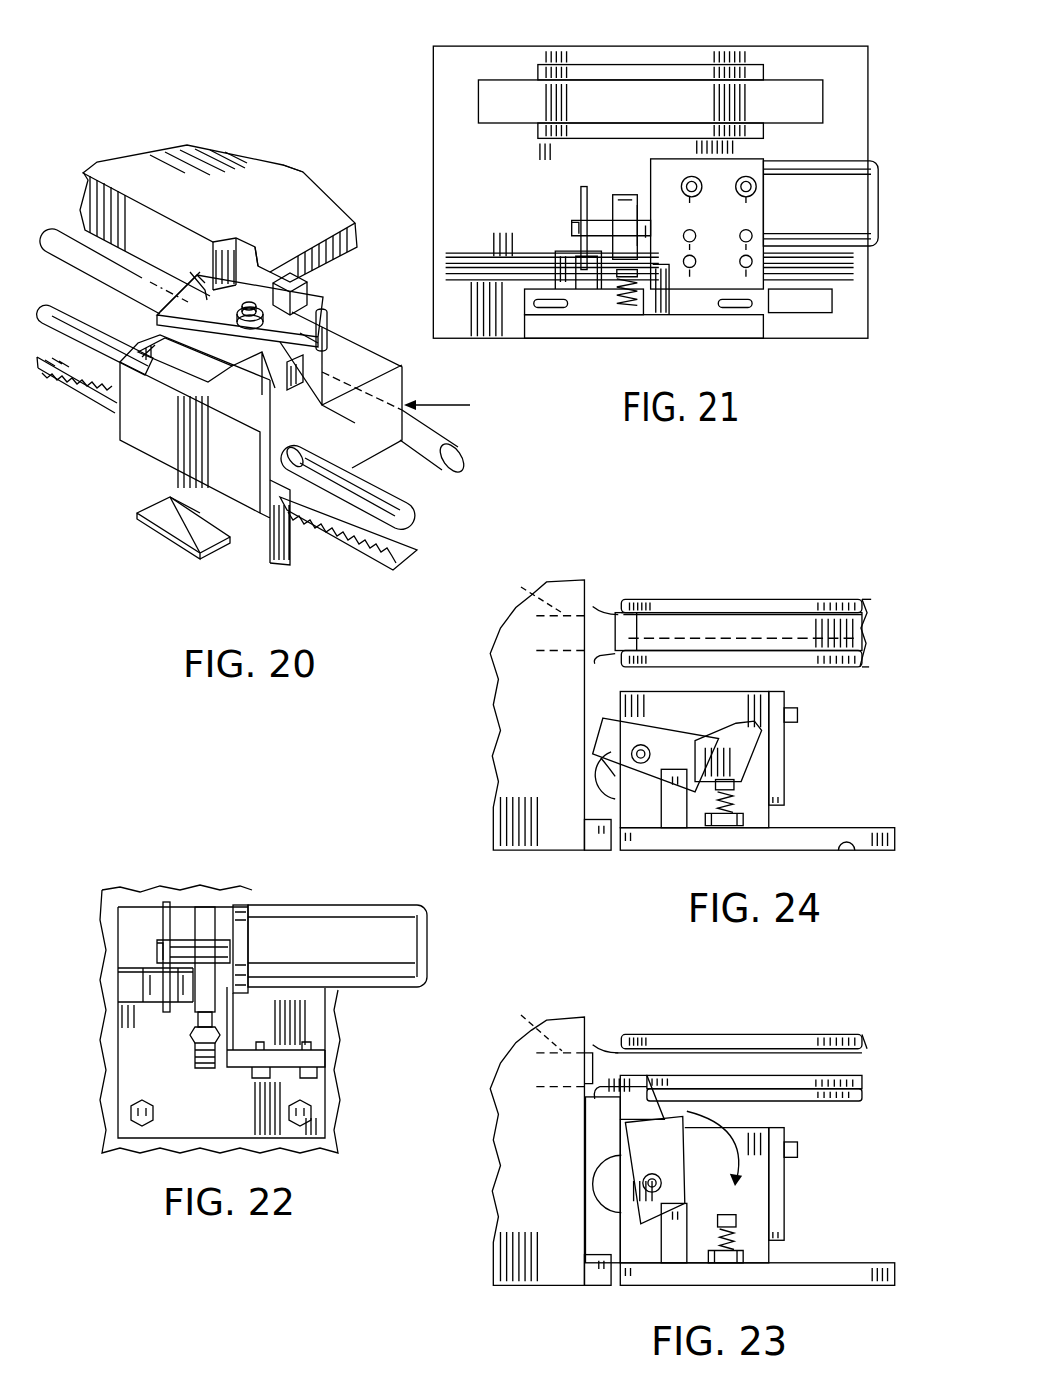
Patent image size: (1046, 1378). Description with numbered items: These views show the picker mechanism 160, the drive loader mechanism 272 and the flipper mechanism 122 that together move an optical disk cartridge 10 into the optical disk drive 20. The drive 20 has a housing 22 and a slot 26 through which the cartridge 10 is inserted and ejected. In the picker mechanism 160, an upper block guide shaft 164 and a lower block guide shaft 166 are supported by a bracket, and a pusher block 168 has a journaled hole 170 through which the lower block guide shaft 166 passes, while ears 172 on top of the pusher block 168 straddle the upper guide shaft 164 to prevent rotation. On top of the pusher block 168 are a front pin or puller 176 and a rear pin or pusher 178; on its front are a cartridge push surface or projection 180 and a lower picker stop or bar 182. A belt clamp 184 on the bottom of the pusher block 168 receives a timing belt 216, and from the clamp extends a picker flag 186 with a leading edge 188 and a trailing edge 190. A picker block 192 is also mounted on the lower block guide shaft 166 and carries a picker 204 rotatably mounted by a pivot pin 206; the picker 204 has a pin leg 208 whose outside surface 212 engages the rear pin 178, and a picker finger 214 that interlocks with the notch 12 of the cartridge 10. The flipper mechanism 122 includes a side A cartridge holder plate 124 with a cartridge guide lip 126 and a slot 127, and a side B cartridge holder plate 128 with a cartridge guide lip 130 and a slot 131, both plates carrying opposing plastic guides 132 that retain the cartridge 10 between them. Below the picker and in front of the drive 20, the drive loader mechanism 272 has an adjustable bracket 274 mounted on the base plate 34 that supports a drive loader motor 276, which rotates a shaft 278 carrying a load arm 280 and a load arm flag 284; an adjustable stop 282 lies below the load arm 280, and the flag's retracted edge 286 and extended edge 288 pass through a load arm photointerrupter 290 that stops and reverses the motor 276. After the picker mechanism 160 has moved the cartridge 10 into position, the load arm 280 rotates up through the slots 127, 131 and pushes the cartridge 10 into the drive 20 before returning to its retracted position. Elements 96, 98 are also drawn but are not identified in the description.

In FIG. 20, the optical disk cartridge 10 is at (240, 162).
In FIG. 24, the optical disk cartridge 10 is at (713, 622).
In FIG. 23, the optical disk cartridge 10 is at (600, 1055).
In FIG. 20, the notch 12 is at (238, 238).
In FIG. 21, the optical disk drive 20 is at (460, 60).
In FIG. 24, the optical disk drive 20 is at (563, 570).
In FIG. 23, the optical disk drive 20 is at (566, 1008).
In FIG. 24, the housing 22 is at (495, 745).
In FIG. 23, the housing 22 is at (495, 1215).
In FIG. 21, the slot 26 is at (652, 108).
In FIG. 24, the slot 26 is at (535, 594).
In FIG. 23, the slot 26 is at (529, 1028).
In FIG. 24, the base plate 34 is at (840, 848).
In FIG. 24, the guide rail 96 is at (571, 853).
In FIG. 23, the guide rail 96 is at (565, 1287).
In FIG. 24, the guide rail 98 is at (595, 838).
In FIG. 23, the guide rail 98 is at (590, 1270).
In FIG. 24, the flipper mechanism 122 is at (806, 606).
In FIG. 23, the flipper mechanism 122 is at (848, 1036).
In FIG. 24, the side A cartridge holder plate 124 is at (768, 605).
In FIG. 23, the side A cartridge holder plate 124 is at (745, 1040).
In FIG. 24, the cartridge guide lip 126 is at (597, 605).
In FIG. 23, the cartridge guide lip 126 is at (597, 1038).
In FIG. 24, the slot 127 is at (668, 608).
In FIG. 23, the slot 127 is at (648, 1035).
In FIG. 24, the side B cartridge holder plate 128 is at (840, 643).
In FIG. 23, the side B cartridge holder plate 128 is at (778, 1075).
In FIG. 24, the cartridge guide lip 130 is at (590, 652).
In FIG. 23, the cartridge guide lip 130 is at (590, 1092).
In FIG. 24, the slot 131 is at (638, 612).
In FIG. 23, the slot 131 is at (700, 1078).
In FIG. 24, the plastic guides 132 is at (860, 618).
In FIG. 23, the plastic guides 132 is at (680, 1078).
In FIG. 20, the picker mechanism 160 is at (468, 399).
In FIG. 20, the upper block guide shaft 164 is at (430, 470).
In FIG. 20, the lower block guide shaft 166 is at (405, 493).
In FIG. 20, the pusher block 168 is at (395, 385).
In FIG. 20, the journaled hole 170 is at (298, 452).
In FIG. 20, the ears 172 is at (283, 343).
In FIG. 20, the front pin or puller 176 is at (323, 296).
In FIG. 20, the rear pin or pusher 178 is at (330, 323).
In FIG. 20, the cartridge push surface or projection 180 is at (295, 256).
In FIG. 20, the lower picker stop or bar 182 is at (153, 350).
In FIG. 20, the belt clamp 184 is at (288, 515).
In FIG. 20, the picker flag 186 is at (177, 527).
In FIG. 20, the leading edge 188 is at (143, 513).
In FIG. 20, the trailing edge 190 is at (222, 547).
In FIG. 20, the picker block 192 is at (182, 375).
In FIG. 20, the picker 204 is at (217, 242).
In FIG. 20, the pivot pin 206 is at (250, 304).
In FIG. 20, the pin leg 208 is at (323, 300).
In FIG. 20, the outside surface 212 is at (333, 343).
In FIG. 20, the picker finger 214 is at (193, 276).
In FIG. 20, the timing belt 216 is at (407, 553).
In FIG. 21, the drive loader mechanism 272 is at (840, 158).
In FIG. 22, the drive loader mechanism 272 is at (354, 896).
In FIG. 24, the drive loader mechanism 272 is at (777, 694).
In FIG. 23, the drive loader mechanism 272 is at (755, 1127).
In FIG. 21, the adjustable bracket 274 is at (732, 270).
In FIG. 22, the adjustable bracket 274 is at (320, 1060).
In FIG. 24, the adjustable bracket 274 is at (775, 750).
In FIG. 23, the adjustable bracket 274 is at (775, 1178).
In FIG. 21, the drive loader motor 276 is at (832, 211).
In FIG. 22, the drive loader motor 276 is at (347, 954).
In FIG. 24, the drive loader motor 276 is at (600, 780).
In FIG. 23, the drive loader motor 276 is at (600, 1182).
In FIG. 21, the shaft 278 is at (643, 215).
In FIG. 22, the shaft 278 is at (222, 910).
In FIG. 24, the shaft 278 is at (638, 740).
In FIG. 23, the shaft 278 is at (655, 1175).
In FIG. 21, the load arm 280 is at (620, 200).
In FIG. 22, the load arm 280 is at (202, 910).
In FIG. 24, the load arm 280 is at (705, 740).
In FIG. 23, the load arm 280 is at (627, 1100).
In FIG. 21, the adjustable stop 282 is at (610, 287).
In FIG. 22, the adjustable stop 282 is at (190, 1040).
In FIG. 24, the adjustable stop 282 is at (735, 800).
In FIG. 23, the adjustable stop 282 is at (733, 1233).
In FIG. 21, the load arm flag 284 is at (575, 195).
In FIG. 22, the load arm flag 284 is at (153, 927).
In FIG. 24, the load arm flag 284 is at (600, 730).
In FIG. 23, the load arm flag 284 is at (637, 1135).
In FIG. 23, the retracted edge 286 is at (690, 1110).
In FIG. 24, the extended edge 288 is at (598, 758).
In FIG. 21, the load arm photointerrupter 290 is at (560, 245).
In FIG. 22, the load arm photointerrupter 290 is at (155, 993).
In FIG. 24, the load arm photointerrupter 290 is at (670, 815).
In FIG. 23, the load arm photointerrupter 290 is at (670, 1250).